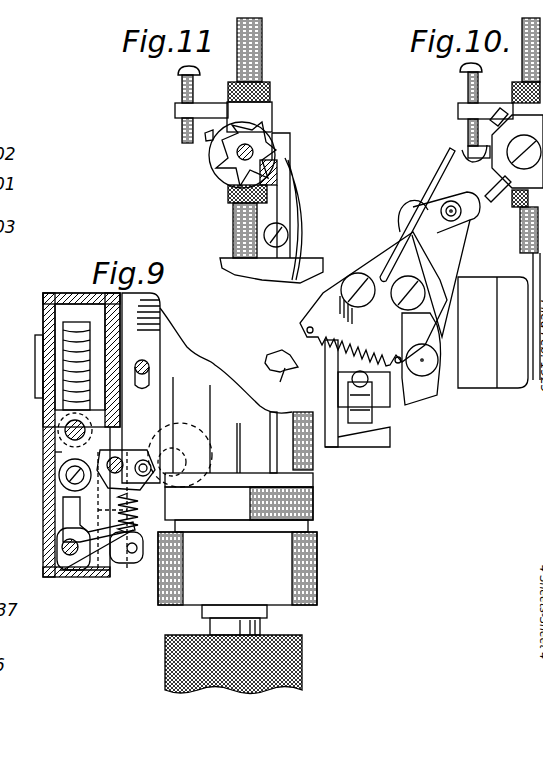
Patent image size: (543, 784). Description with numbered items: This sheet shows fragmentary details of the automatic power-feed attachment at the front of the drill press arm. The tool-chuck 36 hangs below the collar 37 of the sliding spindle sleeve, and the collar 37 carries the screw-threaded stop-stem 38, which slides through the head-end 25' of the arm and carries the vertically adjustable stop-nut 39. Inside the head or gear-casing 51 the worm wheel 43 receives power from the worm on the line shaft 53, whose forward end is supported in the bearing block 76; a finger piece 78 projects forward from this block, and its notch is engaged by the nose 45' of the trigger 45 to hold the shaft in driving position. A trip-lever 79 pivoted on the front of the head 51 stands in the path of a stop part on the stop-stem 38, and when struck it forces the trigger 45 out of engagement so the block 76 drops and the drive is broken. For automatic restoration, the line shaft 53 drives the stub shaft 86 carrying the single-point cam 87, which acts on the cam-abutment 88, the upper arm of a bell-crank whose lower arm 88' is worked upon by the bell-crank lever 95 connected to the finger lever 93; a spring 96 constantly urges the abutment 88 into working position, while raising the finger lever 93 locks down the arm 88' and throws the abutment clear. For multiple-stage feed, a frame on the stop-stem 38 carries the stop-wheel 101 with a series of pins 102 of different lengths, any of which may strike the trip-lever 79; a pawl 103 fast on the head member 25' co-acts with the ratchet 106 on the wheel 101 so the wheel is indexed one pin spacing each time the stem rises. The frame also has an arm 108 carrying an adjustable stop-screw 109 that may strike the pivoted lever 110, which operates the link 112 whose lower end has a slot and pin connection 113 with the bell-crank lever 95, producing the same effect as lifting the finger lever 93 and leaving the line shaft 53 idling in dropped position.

In FIG. 10, the head-end of arm 25' is at (493, 347).
In FIG. 9, the head-end of arm 25' is at (184, 408).
In FIG. 9, the tool-chuck 36 is at (302, 658).
In FIG. 9, the collar 37 is at (317, 562).
In FIG. 11, the stop-stem 38 is at (263, 53).
In FIG. 10, the stop-stem 38 is at (522, 57).
In FIG. 11, the stop-nut 39 is at (228, 196).
In FIG. 10, the stop-nut 39 is at (514, 205).
In FIG. 9, the worm wheel 43 is at (67, 366).
In FIG. 9, the trigger 45 is at (270, 339).
In FIG. 9, the nose of trigger 45' is at (280, 385).
In FIG. 9, the head or gear-casing 51 is at (70, 293).
In FIG. 9, the line shaft 53 is at (56, 435).
In FIG. 10, the bearing block 76 is at (362, 428).
In FIG. 9, the bearing block 76 is at (62, 452).
In FIG. 10, the finger piece 78 is at (378, 420).
In FIG. 10, the trip-lever 79 is at (443, 193).
In FIG. 9, the stub shaft 86 is at (58, 478).
In FIG. 9, the cam 87 is at (62, 508).
In FIG. 9, the cam-abutment 88 is at (46, 547).
In FIG. 9, the lower arm of bell-crank lever 88' is at (85, 590).
In FIG. 9, the finger lever 93 is at (239, 509).
In FIG. 9, the bell-crank lever 95 is at (115, 563).
In FIG. 9, the spring 96 is at (140, 517).
In FIG. 10, the stop-wheel 101 is at (460, 143).
In FIG. 10, the pins 102 is at (470, 147).
In FIG. 11, the pawl 103 is at (292, 147).
In FIG. 11, the ratchet 106 is at (275, 133).
In FIG. 11, the arm 108 is at (175, 110).
In FIG. 10, the arm 108 is at (458, 108).
In FIG. 11, the stop-screw 109 is at (195, 85).
In FIG. 10, the stop-screw 109 is at (468, 96).
In FIG. 10, the lever 110 is at (446, 164).
In FIG. 10, the link 112 is at (398, 220).
In FIG. 9, the link 112 is at (157, 322).
In FIG. 9, the slot and pin connection 113 is at (133, 480).